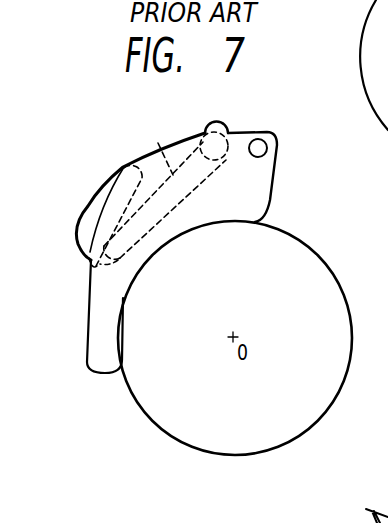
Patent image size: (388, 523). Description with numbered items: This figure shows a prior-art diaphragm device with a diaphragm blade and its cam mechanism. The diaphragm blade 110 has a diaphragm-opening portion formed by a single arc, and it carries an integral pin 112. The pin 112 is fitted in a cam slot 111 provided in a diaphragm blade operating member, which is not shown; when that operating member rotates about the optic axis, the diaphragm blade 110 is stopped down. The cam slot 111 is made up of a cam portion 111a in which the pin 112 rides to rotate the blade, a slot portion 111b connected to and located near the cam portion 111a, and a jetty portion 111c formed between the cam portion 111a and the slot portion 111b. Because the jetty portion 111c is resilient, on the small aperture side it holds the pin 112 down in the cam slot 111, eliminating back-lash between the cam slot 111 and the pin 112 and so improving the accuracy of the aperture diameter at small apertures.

The diaphragm blade 110 is at (257, 198).
The cam slot 111 is at (160, 149).
The cam portion 111a is at (162, 220).
The slot portion 111b is at (86, 215).
The jetty portion 111c is at (97, 265).
The pin 112 is at (215, 123).